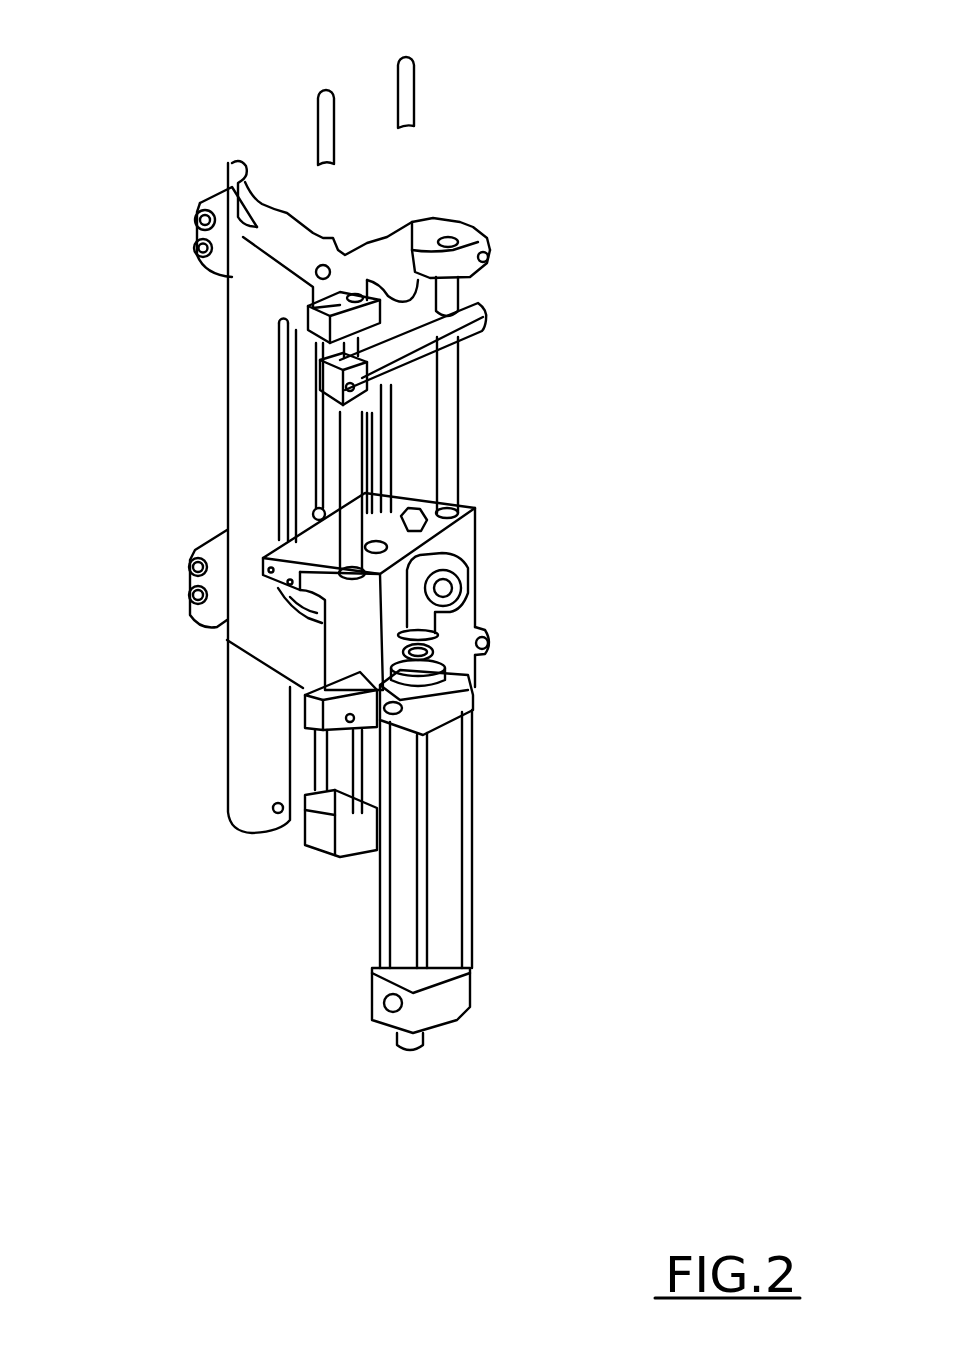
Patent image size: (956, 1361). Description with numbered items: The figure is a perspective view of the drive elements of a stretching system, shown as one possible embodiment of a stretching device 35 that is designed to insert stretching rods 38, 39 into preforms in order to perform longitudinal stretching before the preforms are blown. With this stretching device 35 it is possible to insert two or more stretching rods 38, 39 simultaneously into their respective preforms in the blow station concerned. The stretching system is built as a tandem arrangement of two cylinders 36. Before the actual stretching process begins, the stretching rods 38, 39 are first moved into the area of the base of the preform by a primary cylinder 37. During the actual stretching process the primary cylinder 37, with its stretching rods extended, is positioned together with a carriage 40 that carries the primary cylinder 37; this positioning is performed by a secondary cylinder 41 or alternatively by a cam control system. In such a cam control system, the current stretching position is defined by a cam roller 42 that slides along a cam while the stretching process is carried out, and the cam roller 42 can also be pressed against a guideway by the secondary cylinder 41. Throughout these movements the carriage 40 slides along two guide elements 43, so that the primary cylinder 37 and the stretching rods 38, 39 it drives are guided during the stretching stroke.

The stretching device 35 is at (488, 207).
The cylinders 36 is at (302, 998).
The primary cylinder 37 is at (318, 845).
The stretching rod 38 is at (318, 113).
The stretching rod 39 is at (413, 80).
The carriage 40 is at (460, 614).
The secondary cylinder 41 is at (447, 838).
The cam roller 42 is at (442, 568).
The guide elements 43 is at (448, 415).